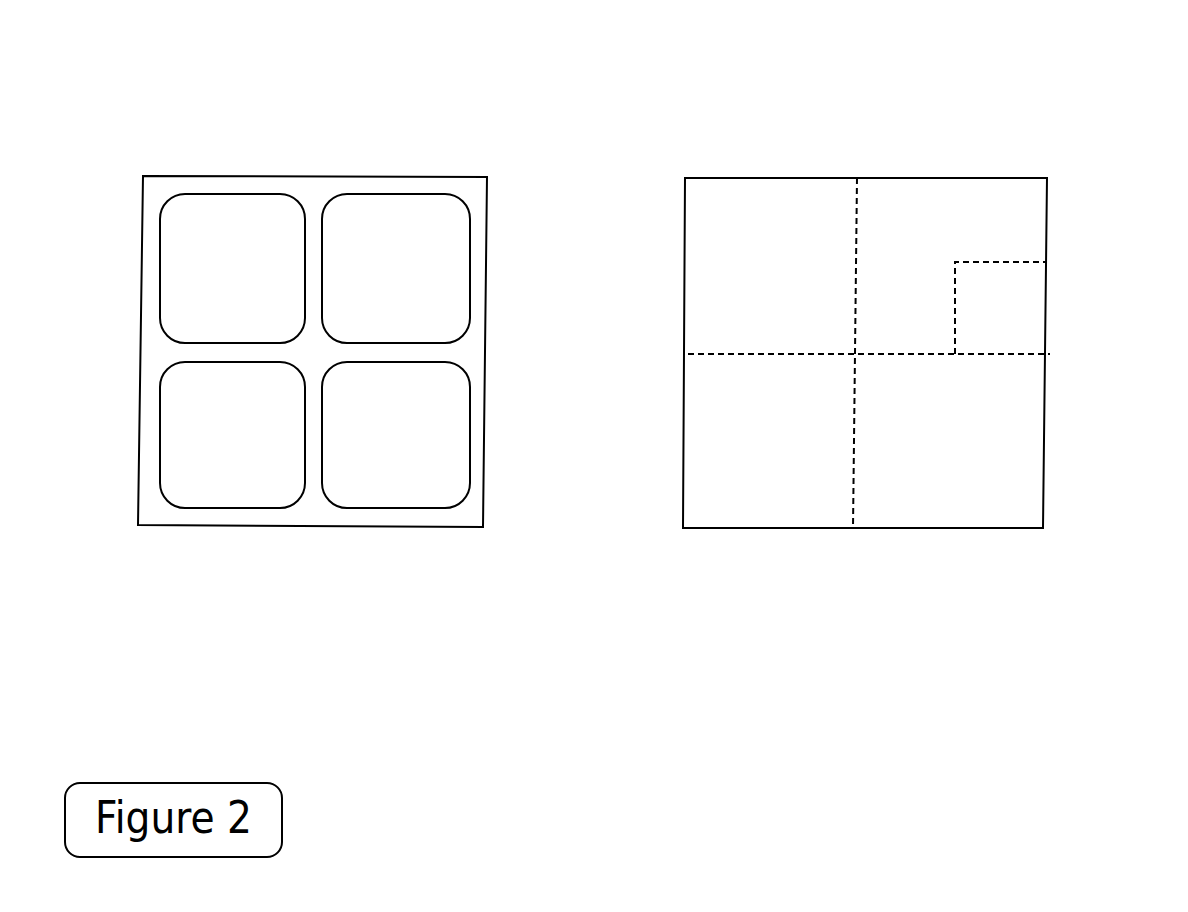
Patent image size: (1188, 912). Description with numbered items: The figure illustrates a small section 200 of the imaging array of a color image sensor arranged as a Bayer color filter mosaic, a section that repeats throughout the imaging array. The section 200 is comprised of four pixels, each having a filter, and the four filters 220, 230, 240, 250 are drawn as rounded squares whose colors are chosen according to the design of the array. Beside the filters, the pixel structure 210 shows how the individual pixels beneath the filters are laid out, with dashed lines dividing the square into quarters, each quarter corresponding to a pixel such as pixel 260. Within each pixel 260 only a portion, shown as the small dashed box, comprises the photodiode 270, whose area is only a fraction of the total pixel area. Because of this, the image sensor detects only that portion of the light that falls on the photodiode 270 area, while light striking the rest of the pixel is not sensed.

The section 200 is at (317, 158).
The pixel structure 210 is at (868, 160).
The filter 220 is at (197, 232).
The filter 230 is at (433, 232).
The filter 240 is at (193, 472).
The filter 250 is at (432, 473).
The pixel 260 is at (977, 215).
The photodiode 270 is at (1010, 309).